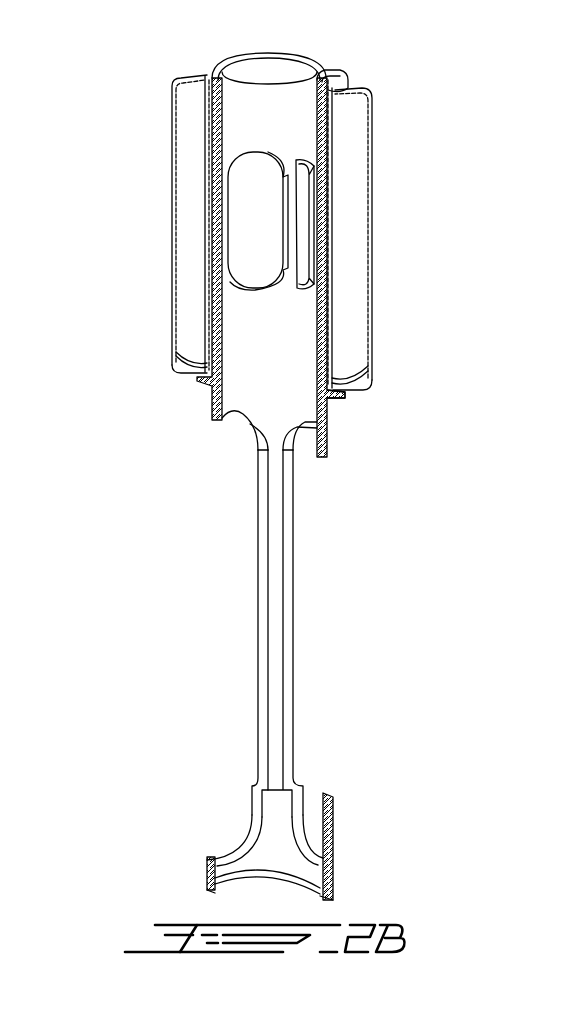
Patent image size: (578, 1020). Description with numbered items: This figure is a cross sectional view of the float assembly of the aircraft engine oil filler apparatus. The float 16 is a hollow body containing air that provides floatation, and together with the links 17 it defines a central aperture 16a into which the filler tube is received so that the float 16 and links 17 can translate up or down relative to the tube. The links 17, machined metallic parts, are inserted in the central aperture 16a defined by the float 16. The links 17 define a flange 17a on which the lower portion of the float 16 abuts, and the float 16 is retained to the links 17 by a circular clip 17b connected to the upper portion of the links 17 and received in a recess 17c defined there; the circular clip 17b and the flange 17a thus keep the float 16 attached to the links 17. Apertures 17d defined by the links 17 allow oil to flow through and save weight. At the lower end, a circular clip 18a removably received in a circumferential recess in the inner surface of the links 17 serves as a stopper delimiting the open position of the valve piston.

The float 16 is at (378, 249).
The central aperture 16a is at (300, 136).
The link 17 is at (262, 587).
The flange 17a is at (332, 394).
The circular clip 17b is at (332, 80).
The recess 17c is at (312, 76).
The apertures 17d is at (240, 428).
The circular clip 18a is at (207, 880).